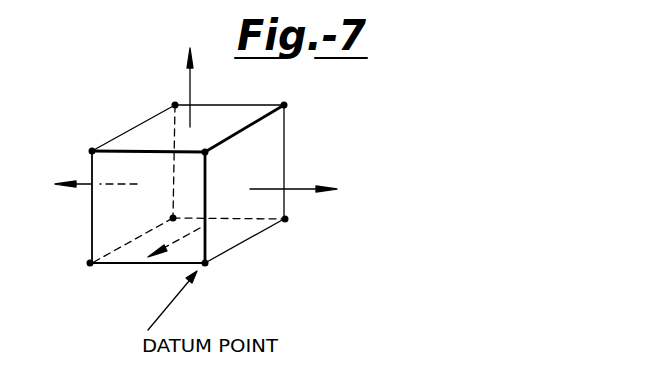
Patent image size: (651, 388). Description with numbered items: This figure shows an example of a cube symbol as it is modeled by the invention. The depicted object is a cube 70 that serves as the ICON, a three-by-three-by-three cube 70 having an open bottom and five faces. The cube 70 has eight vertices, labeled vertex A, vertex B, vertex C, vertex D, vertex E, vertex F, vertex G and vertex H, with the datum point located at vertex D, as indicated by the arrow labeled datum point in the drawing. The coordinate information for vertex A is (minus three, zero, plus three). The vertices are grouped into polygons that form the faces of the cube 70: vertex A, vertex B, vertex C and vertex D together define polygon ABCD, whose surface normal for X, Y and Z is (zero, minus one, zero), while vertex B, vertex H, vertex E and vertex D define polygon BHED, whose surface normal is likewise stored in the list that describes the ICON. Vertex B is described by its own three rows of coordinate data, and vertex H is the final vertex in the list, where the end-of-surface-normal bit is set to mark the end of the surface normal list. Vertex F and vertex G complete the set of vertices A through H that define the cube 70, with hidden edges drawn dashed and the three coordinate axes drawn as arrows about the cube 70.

The cube 70 is at (289, 155).
The vertex A is at (92, 151).
The vertex B is at (205, 150).
The vertex C is at (90, 263).
The vertex D is at (203, 266).
The vertex E is at (285, 219).
The vertex F is at (165, 217).
The vertex G is at (175, 105).
The vertex H is at (284, 105).